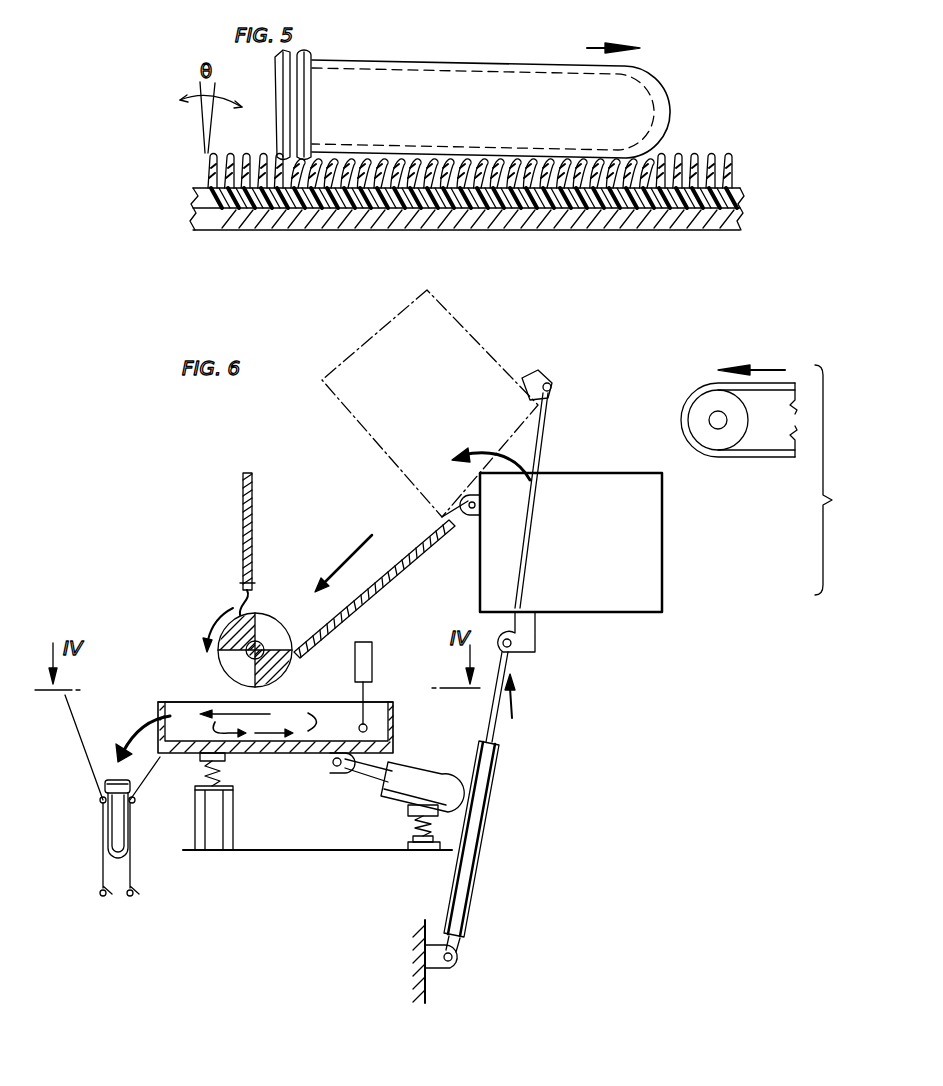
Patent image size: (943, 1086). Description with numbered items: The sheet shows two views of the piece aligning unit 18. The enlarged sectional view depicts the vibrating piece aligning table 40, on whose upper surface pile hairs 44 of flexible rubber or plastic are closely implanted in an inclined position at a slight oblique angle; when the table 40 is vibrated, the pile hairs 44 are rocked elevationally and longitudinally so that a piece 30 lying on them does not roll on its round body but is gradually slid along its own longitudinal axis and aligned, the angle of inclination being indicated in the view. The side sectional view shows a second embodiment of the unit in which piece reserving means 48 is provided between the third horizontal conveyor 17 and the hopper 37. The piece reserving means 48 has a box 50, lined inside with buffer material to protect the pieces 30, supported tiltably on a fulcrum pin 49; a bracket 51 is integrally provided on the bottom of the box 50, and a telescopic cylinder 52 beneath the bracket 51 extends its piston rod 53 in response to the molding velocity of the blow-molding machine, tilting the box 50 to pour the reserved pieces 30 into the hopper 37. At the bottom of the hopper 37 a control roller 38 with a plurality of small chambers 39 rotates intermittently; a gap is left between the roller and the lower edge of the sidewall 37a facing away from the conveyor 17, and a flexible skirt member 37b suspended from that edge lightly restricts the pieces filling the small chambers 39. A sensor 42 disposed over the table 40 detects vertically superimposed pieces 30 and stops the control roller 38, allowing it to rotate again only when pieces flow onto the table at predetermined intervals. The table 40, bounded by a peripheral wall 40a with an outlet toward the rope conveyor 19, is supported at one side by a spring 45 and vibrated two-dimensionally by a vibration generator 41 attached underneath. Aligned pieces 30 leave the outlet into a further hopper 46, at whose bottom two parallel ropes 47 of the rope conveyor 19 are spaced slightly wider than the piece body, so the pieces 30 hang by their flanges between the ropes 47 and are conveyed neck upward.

In FIG. 6, the third horizontal conveyor 17 is at (760, 458).
In FIG. 6, the piece aligning unit 18 is at (238, 476).
In FIG. 6, the rope conveyor 19 is at (97, 832).
In FIG. 5, the piece 30 is at (456, 60).
In FIG. 6, the piece 30 is at (120, 845).
In FIG. 6, the hopper 37 is at (402, 557).
In FIG. 6, the sidewall 37a is at (244, 514).
In FIG. 6, the flexible skirt member 37b is at (240, 606).
In FIG. 6, the control roller 38 is at (216, 666).
In FIG. 6, the small chambers 39 is at (276, 625).
In FIG. 5, the piece aligning table 40 is at (590, 232).
In FIG. 6, the piece aligning table 40 is at (300, 762).
In FIG. 6, the peripheral wall 40a is at (397, 712).
In FIG. 6, the vibration generator 41 is at (412, 770).
In FIG. 6, the sensor 42 is at (373, 657).
In FIG. 5, the pile hairs 44 is at (720, 152).
In FIG. 6, the spring 45 is at (198, 770).
In FIG. 6, the hopper 46 is at (90, 773).
In FIG. 6, the ropes 47 is at (133, 805).
In FIG. 6, the piece reserving means 48 is at (652, 618).
In FIG. 6, the fulcrum pin 49 is at (467, 517).
In FIG. 6, the box 50 is at (480, 348).
In FIG. 6, the bracket 51 is at (545, 375).
In FIG. 6, the telescopic cylinder 52 is at (487, 800).
In FIG. 6, the piston rod 53 is at (495, 725).